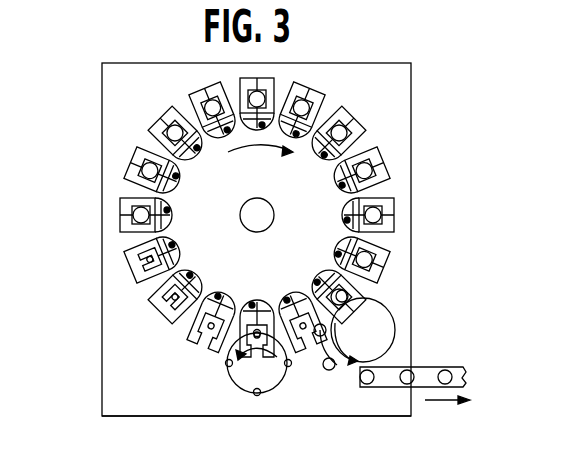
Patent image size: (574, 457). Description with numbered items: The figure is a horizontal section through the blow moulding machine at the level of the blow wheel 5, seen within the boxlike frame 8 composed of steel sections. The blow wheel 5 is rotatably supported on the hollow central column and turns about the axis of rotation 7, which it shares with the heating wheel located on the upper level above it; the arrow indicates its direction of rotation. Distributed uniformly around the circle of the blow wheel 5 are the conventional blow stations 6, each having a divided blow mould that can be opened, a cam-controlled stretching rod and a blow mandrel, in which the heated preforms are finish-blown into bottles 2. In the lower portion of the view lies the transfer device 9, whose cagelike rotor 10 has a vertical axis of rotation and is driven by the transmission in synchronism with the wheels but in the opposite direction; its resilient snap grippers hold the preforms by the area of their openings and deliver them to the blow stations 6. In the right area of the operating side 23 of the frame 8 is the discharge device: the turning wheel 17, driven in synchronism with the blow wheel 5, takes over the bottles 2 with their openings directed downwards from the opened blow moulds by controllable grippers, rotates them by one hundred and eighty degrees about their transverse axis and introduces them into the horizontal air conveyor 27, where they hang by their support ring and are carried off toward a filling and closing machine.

The bottles 2 is at (447, 375).
The blow wheel 5 is at (376, 187).
The blow stations 6 is at (148, 125).
The axis of rotation 7 is at (240, 220).
The frame 8 is at (362, 63).
The transfer device 9 is at (282, 386).
The rotor 10 is at (253, 384).
The turning wheel 17 is at (370, 310).
The operating side 23 is at (105, 417).
The air conveyor 27 is at (455, 385).